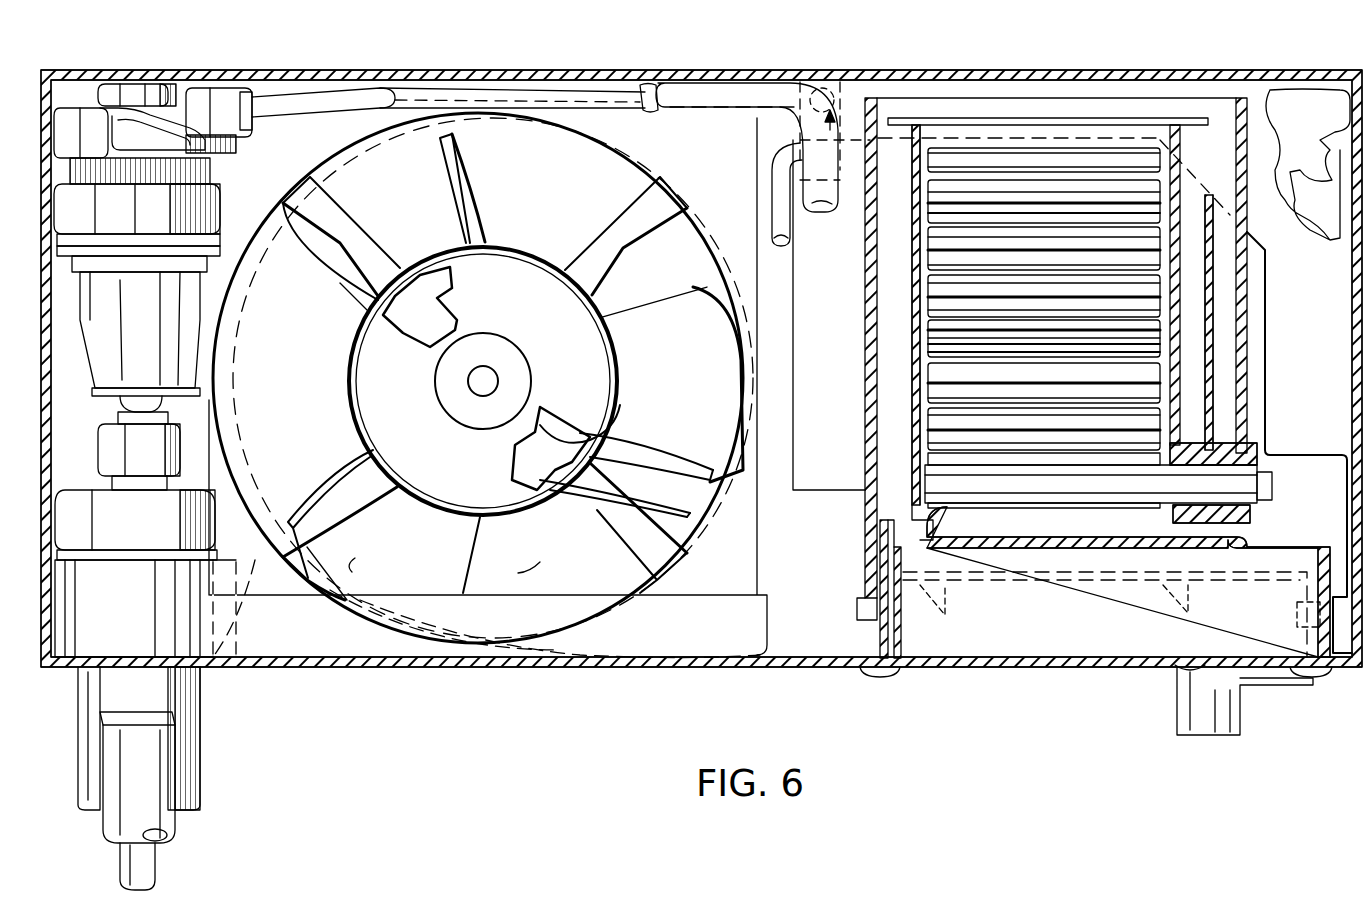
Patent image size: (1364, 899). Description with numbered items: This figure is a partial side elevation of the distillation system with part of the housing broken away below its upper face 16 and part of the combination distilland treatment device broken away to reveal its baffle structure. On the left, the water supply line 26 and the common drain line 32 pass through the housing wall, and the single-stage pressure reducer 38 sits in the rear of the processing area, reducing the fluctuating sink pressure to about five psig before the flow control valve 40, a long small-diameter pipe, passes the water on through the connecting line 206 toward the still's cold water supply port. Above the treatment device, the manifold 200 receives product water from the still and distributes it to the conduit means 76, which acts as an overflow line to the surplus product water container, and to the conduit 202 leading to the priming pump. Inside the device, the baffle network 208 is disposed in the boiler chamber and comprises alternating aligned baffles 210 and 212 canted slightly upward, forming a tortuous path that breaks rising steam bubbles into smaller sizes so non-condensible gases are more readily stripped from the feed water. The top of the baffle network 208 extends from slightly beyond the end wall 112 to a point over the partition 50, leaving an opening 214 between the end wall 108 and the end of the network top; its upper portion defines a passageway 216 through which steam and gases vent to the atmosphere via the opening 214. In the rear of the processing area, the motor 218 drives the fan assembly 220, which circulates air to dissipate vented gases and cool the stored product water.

The upper face 16 is at (568, 70).
The water supply line 26 is at (160, 865).
The drain line 32 is at (162, 760).
The single-stage pressure reducer 38 is at (150, 82).
The flow control valve 40 is at (446, 72).
The partition 50 is at (1213, 280).
The conduit means 76 is at (712, 84).
The end wall 108 is at (1252, 165).
The end wall 112 is at (912, 235).
The manifold 200 is at (845, 100).
The conduit 202 is at (758, 175).
The connecting line 206 is at (656, 84).
The baffle network 208 is at (1060, 112).
The baffle 210 is at (946, 362).
The baffle 212 is at (955, 288).
The opening 214 is at (1218, 112).
The passageway 216 is at (983, 128).
The motor 218 is at (423, 498).
The fan assembly 220 is at (600, 513).